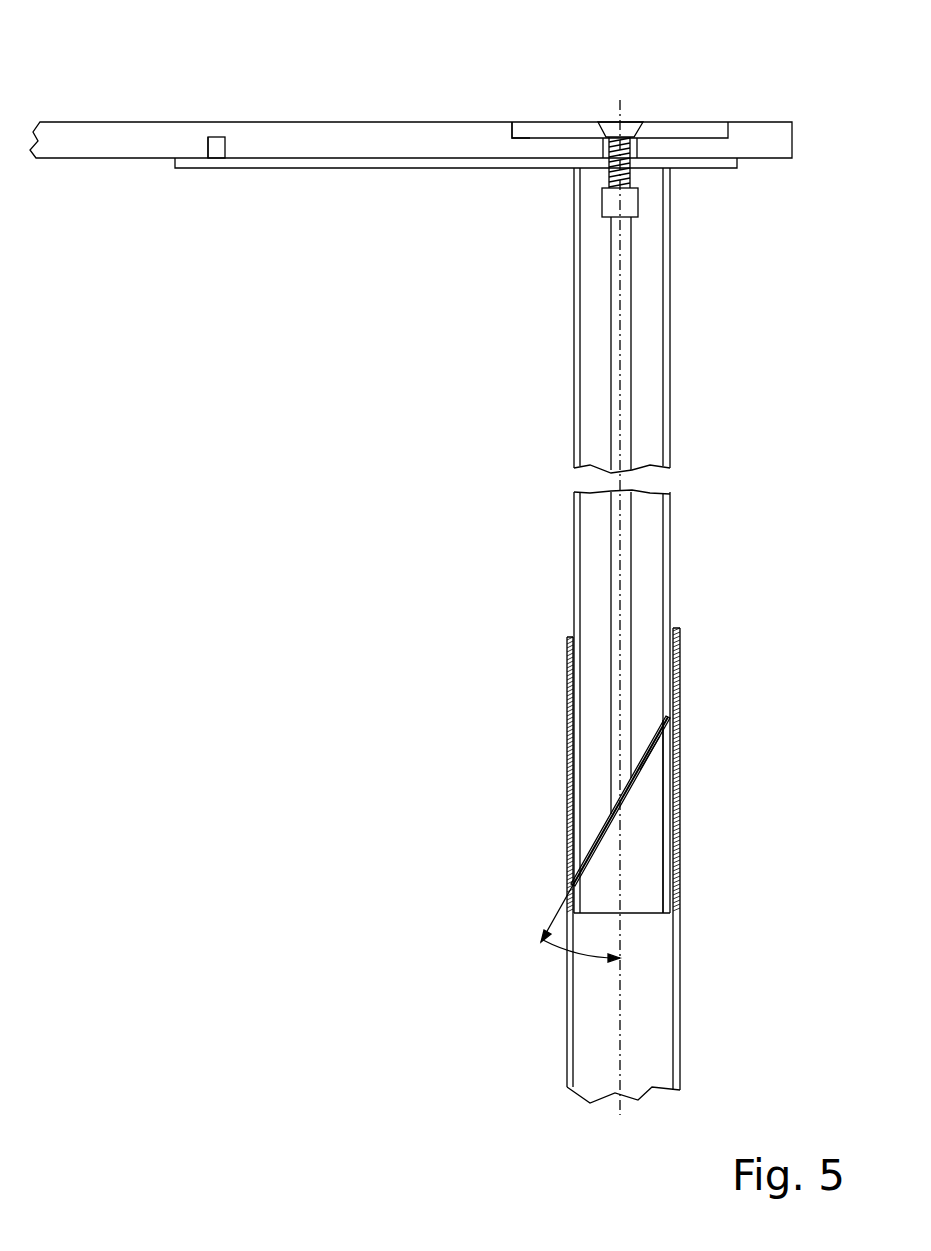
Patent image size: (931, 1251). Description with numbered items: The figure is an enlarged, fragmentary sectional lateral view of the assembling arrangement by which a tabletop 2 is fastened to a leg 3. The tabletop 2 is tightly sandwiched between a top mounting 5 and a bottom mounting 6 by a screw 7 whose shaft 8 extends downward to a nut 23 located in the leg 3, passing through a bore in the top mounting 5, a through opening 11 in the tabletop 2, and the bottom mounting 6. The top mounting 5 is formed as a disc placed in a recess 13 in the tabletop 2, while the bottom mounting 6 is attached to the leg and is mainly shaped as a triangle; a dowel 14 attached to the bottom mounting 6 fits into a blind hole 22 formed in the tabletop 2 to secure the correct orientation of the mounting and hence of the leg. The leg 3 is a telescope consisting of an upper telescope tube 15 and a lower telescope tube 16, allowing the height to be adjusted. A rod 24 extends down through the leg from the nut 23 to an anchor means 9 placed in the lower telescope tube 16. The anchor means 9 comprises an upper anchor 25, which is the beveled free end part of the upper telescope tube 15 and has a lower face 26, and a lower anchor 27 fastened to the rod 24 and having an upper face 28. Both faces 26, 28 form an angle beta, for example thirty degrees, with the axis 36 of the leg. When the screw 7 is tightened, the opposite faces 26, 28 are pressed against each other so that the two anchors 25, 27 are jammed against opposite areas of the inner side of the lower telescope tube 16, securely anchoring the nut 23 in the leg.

The tabletop 2 is at (348, 138).
The leg 3 is at (520, 470).
The top mounting 5 is at (697, 125).
The bottom mounting 6 is at (372, 170).
The screw 7 is at (625, 128).
The shaft 8 is at (632, 170).
The anchor means 9 is at (653, 893).
The through opening 11 is at (598, 145).
The recess 13 is at (512, 122).
The dowel 14 is at (225, 150).
The upper telescope tube 15 is at (672, 367).
The lower telescope tube 16 is at (680, 1045).
The blind hole 22 is at (208, 147).
The nut 23 is at (632, 207).
The rod 24 is at (632, 583).
The upper anchor 25 is at (597, 778).
The lower face 26 is at (655, 720).
The lower anchor 27 is at (648, 860).
The upper face 28 is at (650, 757).
The axis 36 is at (620, 977).